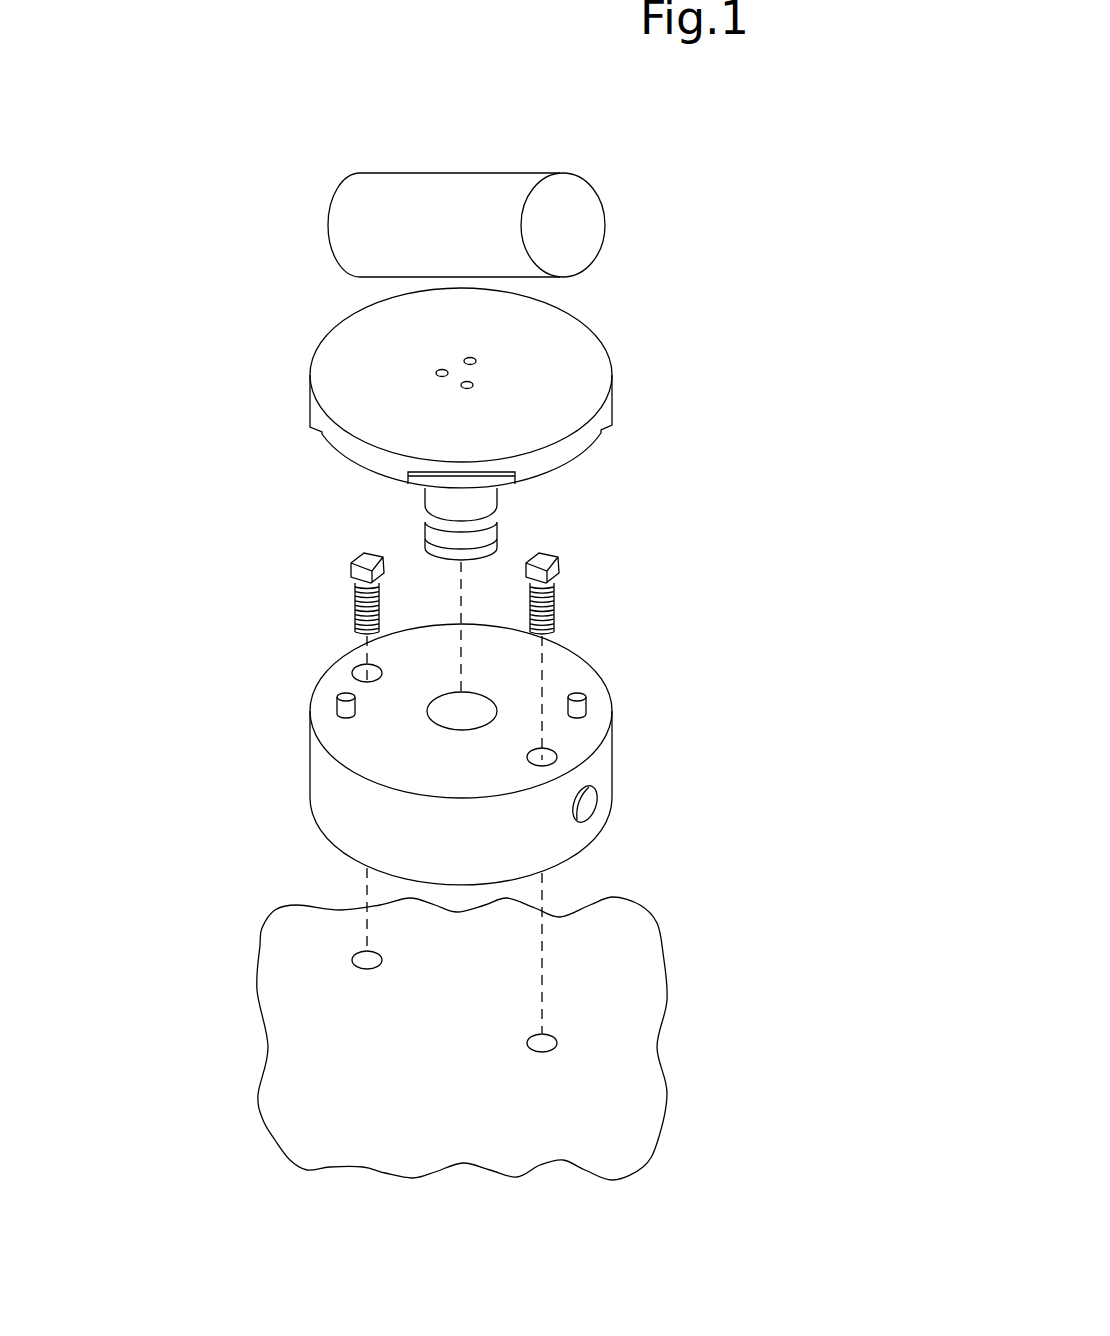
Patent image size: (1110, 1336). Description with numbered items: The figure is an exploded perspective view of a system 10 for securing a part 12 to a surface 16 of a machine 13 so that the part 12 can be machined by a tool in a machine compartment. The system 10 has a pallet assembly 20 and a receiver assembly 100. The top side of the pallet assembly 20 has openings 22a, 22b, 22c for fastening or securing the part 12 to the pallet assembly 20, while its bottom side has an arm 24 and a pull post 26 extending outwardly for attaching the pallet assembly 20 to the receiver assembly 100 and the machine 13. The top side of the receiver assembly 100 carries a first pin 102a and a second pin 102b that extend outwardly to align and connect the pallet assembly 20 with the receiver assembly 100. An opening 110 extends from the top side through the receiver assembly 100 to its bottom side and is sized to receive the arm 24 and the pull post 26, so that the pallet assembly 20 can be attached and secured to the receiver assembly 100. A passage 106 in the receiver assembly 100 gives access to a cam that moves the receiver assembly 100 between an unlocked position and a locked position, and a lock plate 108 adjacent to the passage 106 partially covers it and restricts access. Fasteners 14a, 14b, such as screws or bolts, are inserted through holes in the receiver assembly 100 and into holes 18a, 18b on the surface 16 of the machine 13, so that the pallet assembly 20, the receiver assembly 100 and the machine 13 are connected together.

The system 10 is at (147, 188).
The part 12 is at (343, 178).
The machine 13 is at (268, 1133).
The fastener 14a is at (347, 568).
The fastener 14b is at (560, 568).
The surface 16 is at (416, 1065).
The hole 18a is at (350, 958).
The hole 18b is at (545, 1052).
The pallet assembly 20 is at (428, 378).
The opening 22a is at (430, 377).
The opening 22b is at (480, 357).
The opening 22c is at (480, 382).
The arm 24 is at (423, 505).
The pull post 26 is at (503, 532).
The receiver assembly 100 is at (450, 792).
The first pin 102a is at (333, 705).
The second pin 102b is at (590, 705).
The passage 106 is at (600, 798).
The lock plate 108 is at (582, 822).
The opening 110 is at (432, 727).